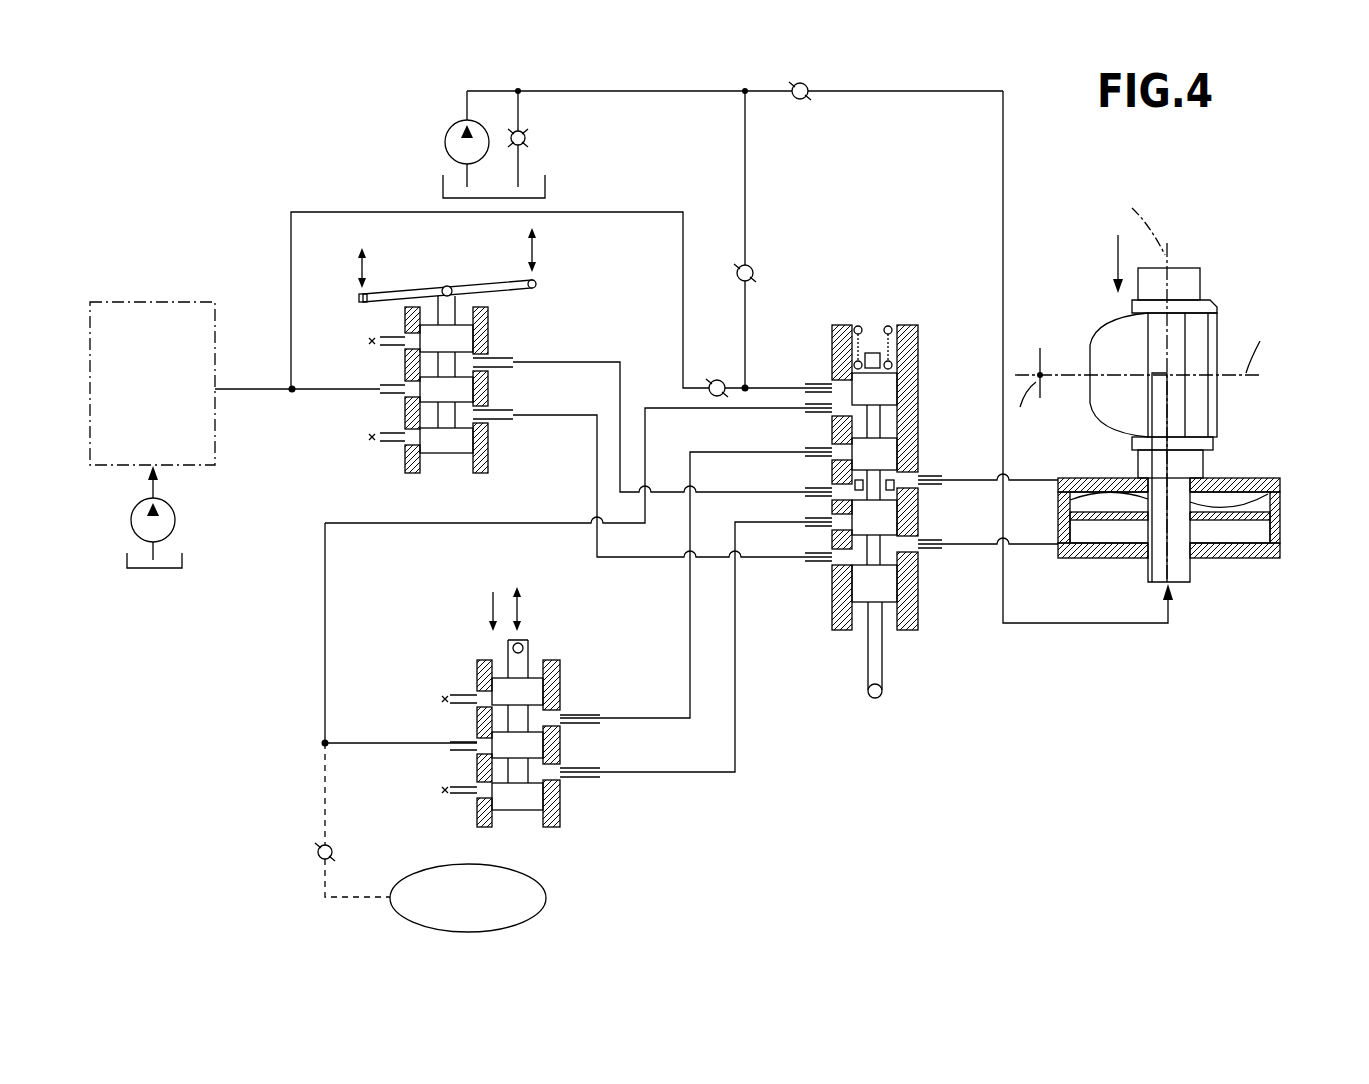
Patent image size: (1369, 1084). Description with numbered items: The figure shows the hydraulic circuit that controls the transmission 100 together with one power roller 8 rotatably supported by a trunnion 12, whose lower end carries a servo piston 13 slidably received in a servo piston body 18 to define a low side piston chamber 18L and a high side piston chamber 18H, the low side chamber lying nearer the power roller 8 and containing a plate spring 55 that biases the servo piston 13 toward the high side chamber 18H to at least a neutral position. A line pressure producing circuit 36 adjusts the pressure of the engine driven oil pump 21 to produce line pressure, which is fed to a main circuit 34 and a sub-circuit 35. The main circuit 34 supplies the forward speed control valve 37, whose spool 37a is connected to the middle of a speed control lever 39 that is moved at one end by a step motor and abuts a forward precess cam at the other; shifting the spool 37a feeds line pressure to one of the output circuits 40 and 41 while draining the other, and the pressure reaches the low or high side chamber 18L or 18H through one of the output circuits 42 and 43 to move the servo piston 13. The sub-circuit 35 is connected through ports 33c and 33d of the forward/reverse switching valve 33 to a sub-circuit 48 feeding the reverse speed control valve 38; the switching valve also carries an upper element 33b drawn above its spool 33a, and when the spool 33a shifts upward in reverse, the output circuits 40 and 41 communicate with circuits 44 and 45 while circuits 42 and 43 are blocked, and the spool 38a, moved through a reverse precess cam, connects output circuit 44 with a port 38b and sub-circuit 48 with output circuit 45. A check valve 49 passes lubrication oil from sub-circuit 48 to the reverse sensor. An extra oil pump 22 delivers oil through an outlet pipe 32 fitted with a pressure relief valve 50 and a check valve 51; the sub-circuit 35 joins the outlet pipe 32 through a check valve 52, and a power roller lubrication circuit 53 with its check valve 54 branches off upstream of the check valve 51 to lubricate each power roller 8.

The power roller 8 is at (1107, 328).
The trunnion 12 is at (1187, 277).
The servo piston 13 is at (1273, 516).
The servo piston body 18 is at (1205, 511).
The low side piston chamber 18L is at (1277, 500).
The high side piston chamber 18H is at (1273, 533).
The oil pump 21 is at (177, 523).
The extra oil pump 22 is at (444, 151).
The outlet pipe 32 is at (745, 157).
The forward/reverse switching valve 33 is at (899, 494).
The spool 33a is at (913, 377).
The valve spring section 33b is at (871, 330).
The port 33c is at (828, 384).
The port 33d is at (827, 417).
The main circuit 34 is at (320, 393).
The sub-circuit 35 is at (290, 283).
The line pressure producing circuit 36 is at (170, 300).
The forward speed control valve 37 is at (426, 404).
The spool 37a is at (457, 337).
The reverse speed control valve 38 is at (547, 750).
The spool 38a is at (527, 692).
The port 38b is at (467, 695).
The speed control lever 39 is at (498, 281).
The output circuit 40 is at (537, 365).
The output circuit 41 is at (527, 415).
The output circuit 42 is at (970, 478).
The output circuit 43 is at (955, 547).
The output circuit 44 is at (597, 718).
The output circuit 45 is at (605, 772).
The sub-circuit 48 is at (325, 703).
The check valve 49 is at (320, 845).
The pressure relief valve 50 is at (526, 138).
The check valve 51 is at (760, 270).
The check valve 52 is at (712, 378).
The power roller lubrication circuit 53 is at (926, 92).
The check valve 54 is at (800, 100).
The plate spring 55 is at (1247, 507).
The transmission 100 is at (1275, 173).